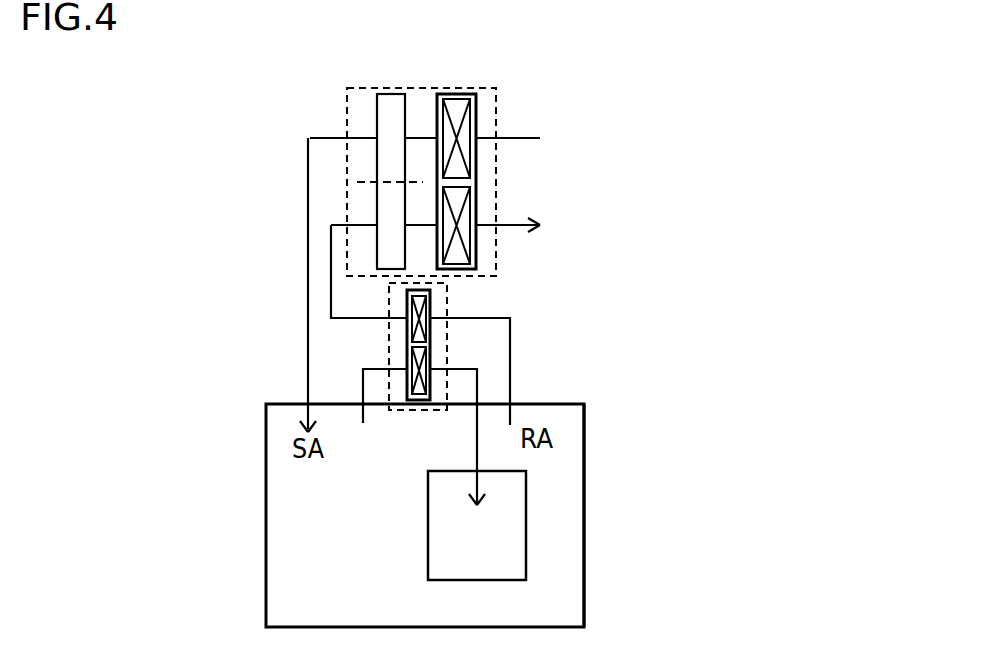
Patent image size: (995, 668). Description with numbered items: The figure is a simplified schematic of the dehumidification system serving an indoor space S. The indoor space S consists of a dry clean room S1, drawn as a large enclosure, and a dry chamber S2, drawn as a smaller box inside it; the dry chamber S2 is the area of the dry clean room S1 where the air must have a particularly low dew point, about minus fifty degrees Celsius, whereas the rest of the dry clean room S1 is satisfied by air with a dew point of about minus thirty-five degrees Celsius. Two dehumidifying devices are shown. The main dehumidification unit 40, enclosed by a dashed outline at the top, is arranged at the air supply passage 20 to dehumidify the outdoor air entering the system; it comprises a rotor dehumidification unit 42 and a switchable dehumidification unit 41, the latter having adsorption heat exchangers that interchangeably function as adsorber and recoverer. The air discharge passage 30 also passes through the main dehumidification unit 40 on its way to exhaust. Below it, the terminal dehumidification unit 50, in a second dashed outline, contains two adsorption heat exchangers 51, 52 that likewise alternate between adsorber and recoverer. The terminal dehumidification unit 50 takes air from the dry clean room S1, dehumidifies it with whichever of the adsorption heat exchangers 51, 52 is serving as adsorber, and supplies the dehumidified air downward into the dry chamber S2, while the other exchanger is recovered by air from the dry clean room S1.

The air supply passage 20 is at (513, 131).
The air discharge passage 30 is at (513, 216).
The main dehumidification unit 40 is at (462, 86).
The switchable dehumidification unit 41 is at (437, 125).
The rotor dehumidification unit 42 is at (377, 125).
The terminal dehumidification unit 50 is at (447, 296).
The adsorption heat exchanger 51 is at (506, 345).
The adsorption heat exchanger 52 is at (430, 335).
The indoor space S is at (584, 442).
The dry clean room S1 is at (584, 495).
The dry chamber S2 is at (526, 545).